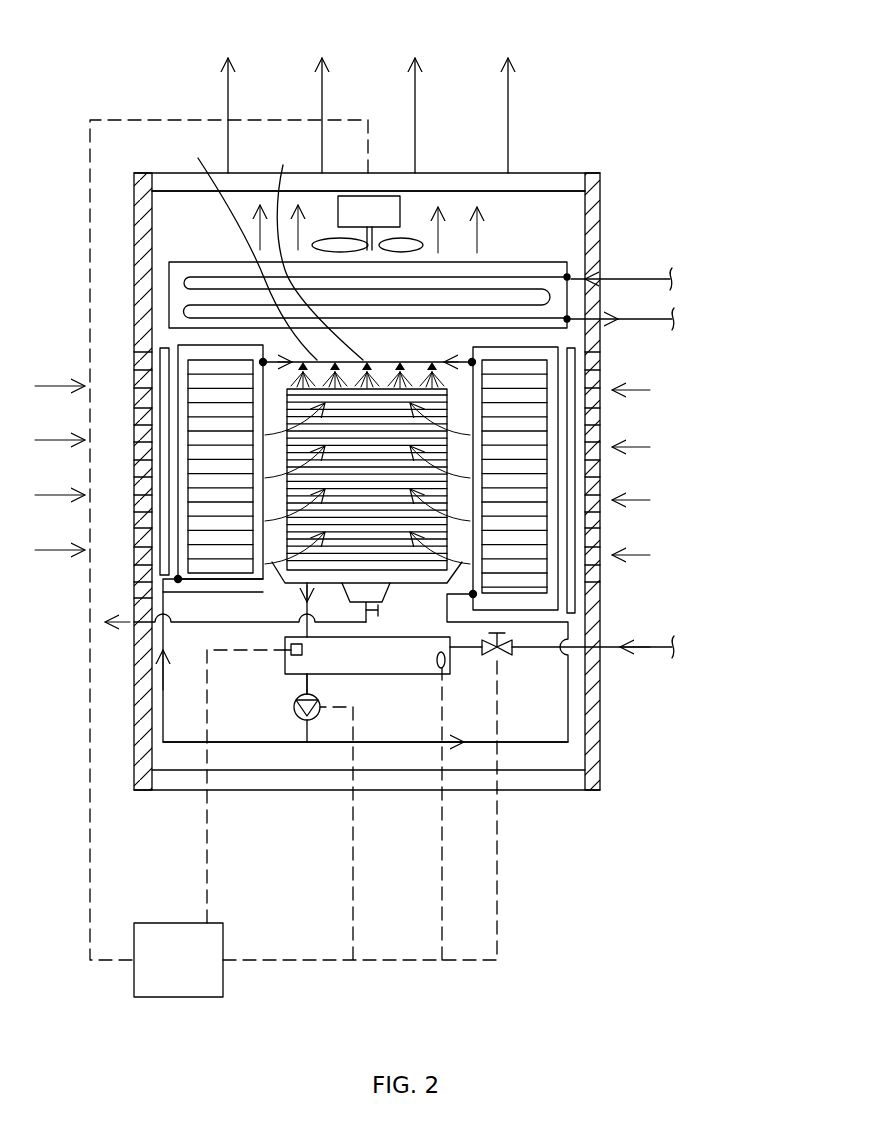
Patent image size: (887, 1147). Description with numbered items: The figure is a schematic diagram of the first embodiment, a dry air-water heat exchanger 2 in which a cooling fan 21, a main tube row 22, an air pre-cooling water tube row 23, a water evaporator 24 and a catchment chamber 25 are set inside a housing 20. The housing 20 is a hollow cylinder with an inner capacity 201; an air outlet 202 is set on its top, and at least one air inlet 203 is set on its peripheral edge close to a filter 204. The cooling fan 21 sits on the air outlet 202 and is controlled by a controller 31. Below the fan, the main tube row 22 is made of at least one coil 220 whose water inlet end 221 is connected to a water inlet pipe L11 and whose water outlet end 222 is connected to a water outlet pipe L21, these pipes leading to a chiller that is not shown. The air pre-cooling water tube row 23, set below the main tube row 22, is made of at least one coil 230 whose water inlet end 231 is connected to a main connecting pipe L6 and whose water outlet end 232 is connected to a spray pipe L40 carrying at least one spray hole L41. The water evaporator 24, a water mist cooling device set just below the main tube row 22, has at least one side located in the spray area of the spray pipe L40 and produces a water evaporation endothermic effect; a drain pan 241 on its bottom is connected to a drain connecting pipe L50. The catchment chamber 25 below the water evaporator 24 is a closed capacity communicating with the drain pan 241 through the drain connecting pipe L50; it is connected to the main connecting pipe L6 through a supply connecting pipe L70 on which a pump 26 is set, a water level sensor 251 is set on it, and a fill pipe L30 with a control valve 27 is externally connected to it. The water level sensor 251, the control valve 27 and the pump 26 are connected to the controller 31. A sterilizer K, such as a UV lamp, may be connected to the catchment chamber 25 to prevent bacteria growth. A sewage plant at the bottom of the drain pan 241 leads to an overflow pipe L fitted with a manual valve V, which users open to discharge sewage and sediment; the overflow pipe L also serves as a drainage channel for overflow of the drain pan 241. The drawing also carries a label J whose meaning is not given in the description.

The dry air-water heat exchanger 2 is at (590, 112).
The housing 20 is at (133, 277).
The inner capacity 201 is at (197, 227).
The air outlet 202 is at (300, 191).
The air inlet 203 is at (140, 388).
The filter 204 is at (158, 370).
The cooling fan 21 is at (398, 213).
The main tube row 22 is at (464, 253).
The coil 220 is at (535, 277).
The water inlet end 221 is at (578, 278).
The water outlet end 222 is at (568, 320).
The air pre-cooling water tube row 23 is at (347, 477).
The coil 230 is at (193, 402).
The water inlet end 231 is at (178, 579).
The water outlet end 232 is at (262, 362).
The water evaporator 24 is at (447, 418).
The drain pan 241 is at (303, 585).
The catchment chamber 25 is at (419, 750).
The water level sensor 251 is at (449, 668).
The pump 26 is at (297, 708).
The control valve 27 is at (500, 655).
The controller 31 is at (172, 922).
The overflow pipe L is at (163, 673).
The water inlet pipe L11 is at (640, 283).
The water outlet pipe L21 is at (647, 322).
The fill pipe L30 is at (660, 647).
The spray pipe L40 is at (250, 245).
The spray hole L41 is at (310, 248).
The drain connecting pipe L50 is at (163, 722).
The main connecting pipe L6 is at (193, 742).
The supply connecting pipe L70 is at (303, 686).
The sterilizer K is at (290, 658).
The drain funnel J is at (390, 595).
The manual valve V is at (380, 612).